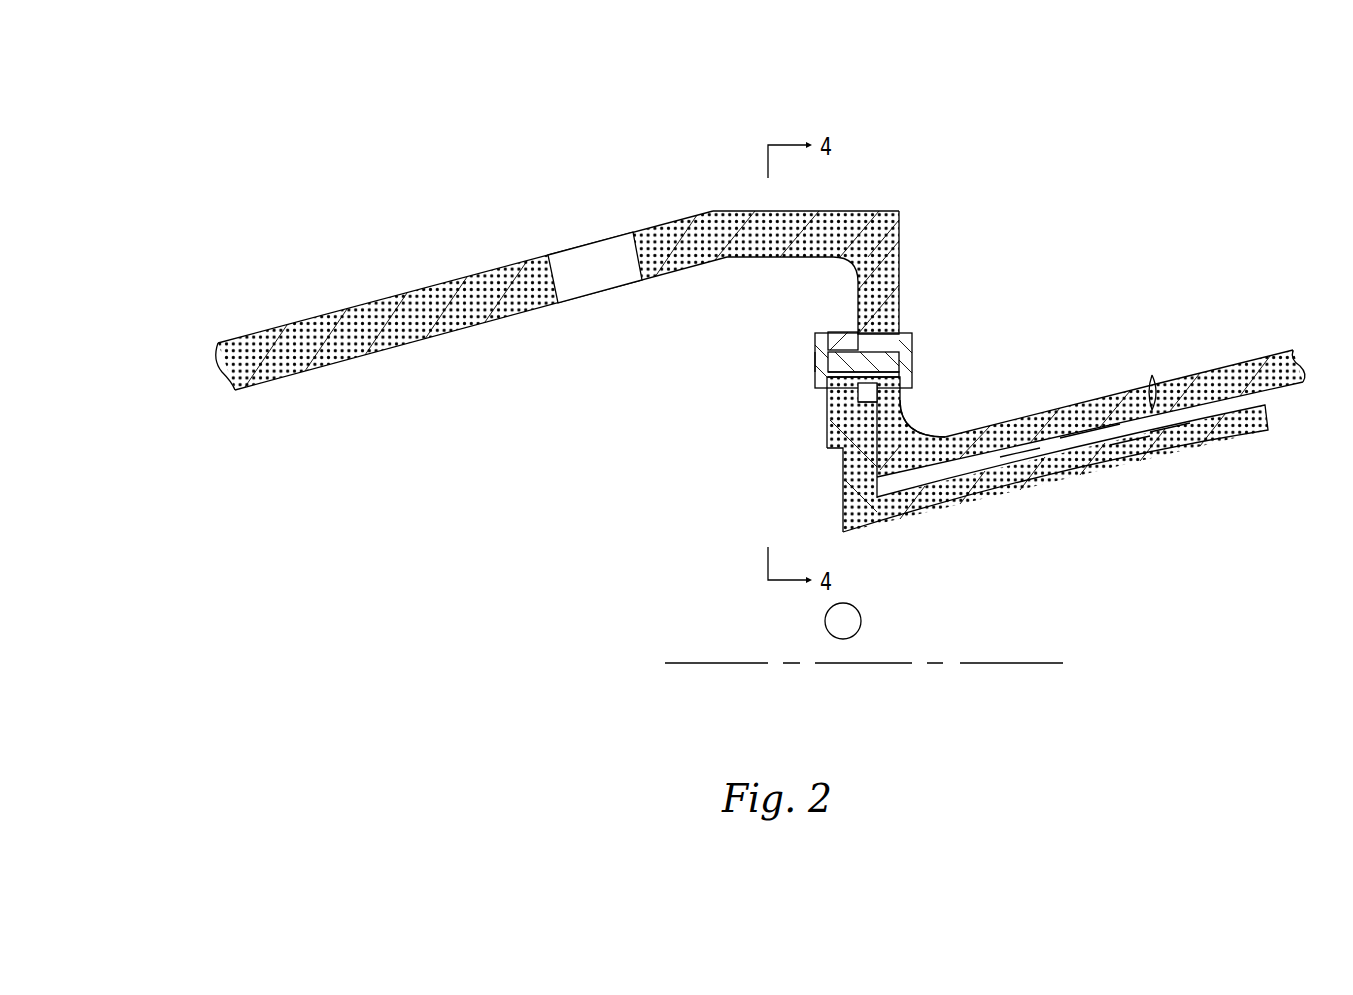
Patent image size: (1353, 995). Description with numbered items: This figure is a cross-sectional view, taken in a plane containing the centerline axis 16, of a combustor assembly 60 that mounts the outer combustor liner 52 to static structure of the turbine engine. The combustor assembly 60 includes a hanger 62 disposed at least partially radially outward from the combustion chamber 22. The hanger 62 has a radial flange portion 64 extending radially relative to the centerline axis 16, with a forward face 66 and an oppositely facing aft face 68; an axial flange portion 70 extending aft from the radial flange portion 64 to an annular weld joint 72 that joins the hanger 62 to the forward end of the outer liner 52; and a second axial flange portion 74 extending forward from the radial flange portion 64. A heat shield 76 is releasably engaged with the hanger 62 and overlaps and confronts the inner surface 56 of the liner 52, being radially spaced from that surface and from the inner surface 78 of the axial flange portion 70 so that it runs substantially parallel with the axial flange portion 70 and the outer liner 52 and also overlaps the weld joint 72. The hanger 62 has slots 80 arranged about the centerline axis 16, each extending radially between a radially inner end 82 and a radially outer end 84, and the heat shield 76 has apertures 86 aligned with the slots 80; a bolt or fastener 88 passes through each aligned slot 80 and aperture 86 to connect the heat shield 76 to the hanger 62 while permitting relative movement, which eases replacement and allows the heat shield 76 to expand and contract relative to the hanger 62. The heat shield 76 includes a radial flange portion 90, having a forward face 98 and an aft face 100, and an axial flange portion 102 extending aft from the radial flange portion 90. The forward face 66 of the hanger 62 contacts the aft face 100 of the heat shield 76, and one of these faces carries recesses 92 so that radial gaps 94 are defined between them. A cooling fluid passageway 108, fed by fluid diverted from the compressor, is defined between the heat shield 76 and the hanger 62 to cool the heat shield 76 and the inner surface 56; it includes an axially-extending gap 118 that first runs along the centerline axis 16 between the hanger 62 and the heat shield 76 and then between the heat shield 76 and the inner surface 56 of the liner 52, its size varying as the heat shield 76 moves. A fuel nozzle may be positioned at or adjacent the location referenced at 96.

The centerline axis 16 is at (752, 663).
The combustion chamber 22 is at (1242, 610).
The outer combustor liner 52 is at (1215, 358).
The inner surface 56 is at (1290, 388).
The combustor assembly 60 is at (927, 125).
The hanger 62 is at (355, 275).
The radial flange portion 64 is at (880, 275).
The forward face 66 is at (858, 293).
The aft face 68 is at (898, 300).
The axial flange portion 70 is at (1040, 420).
The annular weld joint 72 is at (1153, 376).
The second axial flange portion 74 is at (470, 300).
The heat shield 76 is at (975, 534).
The inner surface 78 is at (1088, 432).
The slots 80 is at (858, 343).
The radially inner end 82 is at (897, 360).
The radially outer end 84 is at (912, 338).
The apertures 86 is at (833, 385).
The bolt or fastener 88 is at (810, 363).
The radial flange portion 90 is at (858, 482).
The recesses 92 is at (862, 403).
The radial gaps 94 is at (878, 397).
The fuel nozzle location 96 is at (843, 621).
The forward face 98 is at (843, 467).
The aft face 100 is at (908, 437).
The axial flange portion 102 is at (1167, 444).
The cooling fluid passageway 108 is at (1125, 438).
The axially-extending gap 118 is at (1020, 454).